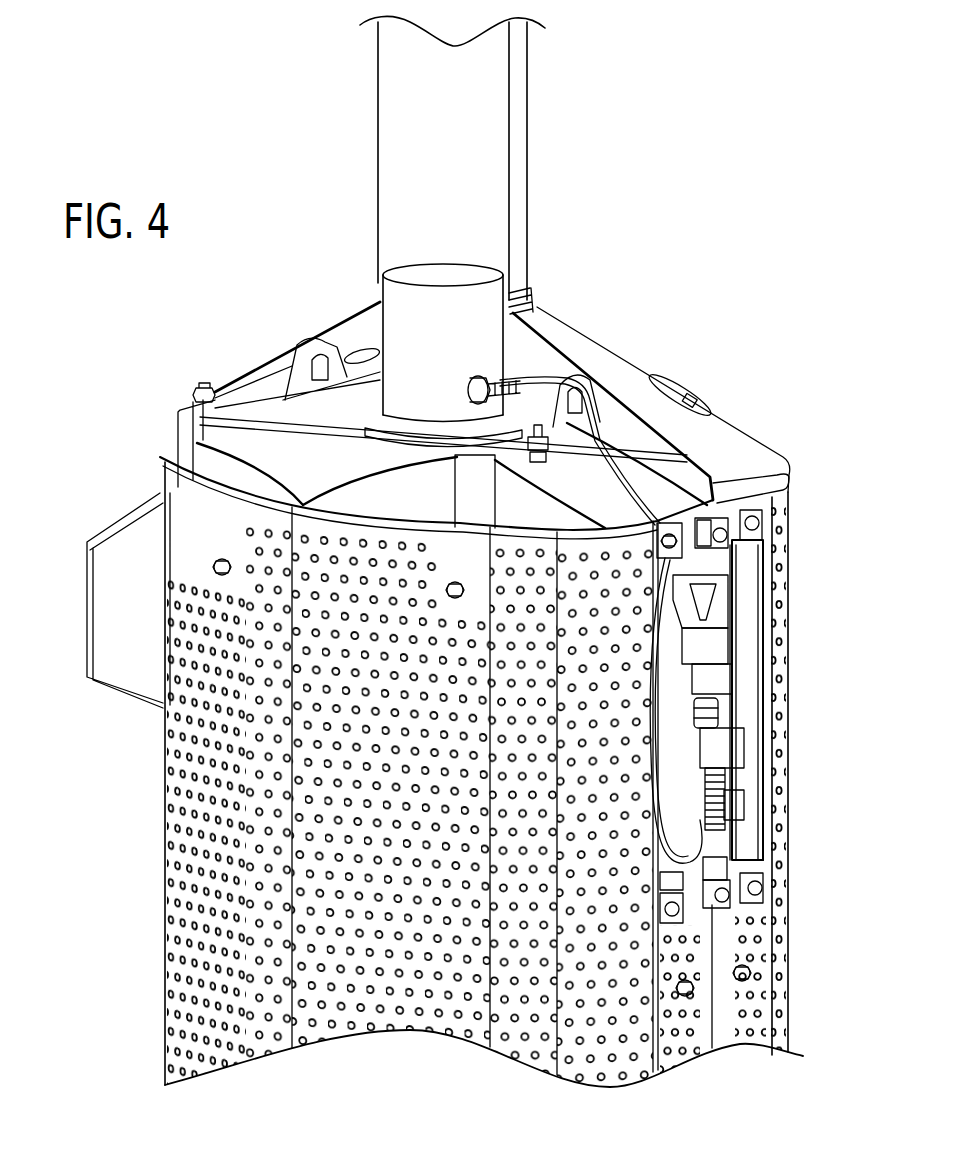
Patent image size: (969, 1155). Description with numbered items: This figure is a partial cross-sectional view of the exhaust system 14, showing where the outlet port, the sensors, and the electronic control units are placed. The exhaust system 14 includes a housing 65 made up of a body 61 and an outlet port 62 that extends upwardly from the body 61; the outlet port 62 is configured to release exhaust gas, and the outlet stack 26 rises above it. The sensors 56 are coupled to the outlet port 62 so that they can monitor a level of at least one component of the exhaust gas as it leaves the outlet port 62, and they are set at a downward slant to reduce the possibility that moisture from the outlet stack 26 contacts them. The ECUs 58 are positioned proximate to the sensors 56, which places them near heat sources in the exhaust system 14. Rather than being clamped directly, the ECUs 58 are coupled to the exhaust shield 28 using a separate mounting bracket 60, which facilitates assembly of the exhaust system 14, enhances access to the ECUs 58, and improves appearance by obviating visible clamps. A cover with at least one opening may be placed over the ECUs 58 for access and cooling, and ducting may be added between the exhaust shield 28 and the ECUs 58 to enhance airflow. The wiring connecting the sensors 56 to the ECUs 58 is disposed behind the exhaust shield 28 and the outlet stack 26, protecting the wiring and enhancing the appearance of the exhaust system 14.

The exhaust system 14 is at (773, 108).
The outlet stack 26 is at (378, 160).
The exhaust shield 28 is at (247, 860).
The sensors 56 is at (547, 343).
The ECUs 58 is at (750, 767).
The separate mounting bracket 60 is at (752, 611).
The body 61 is at (307, 472).
The outlet port 62 is at (427, 347).
The housing 65 is at (485, 302).